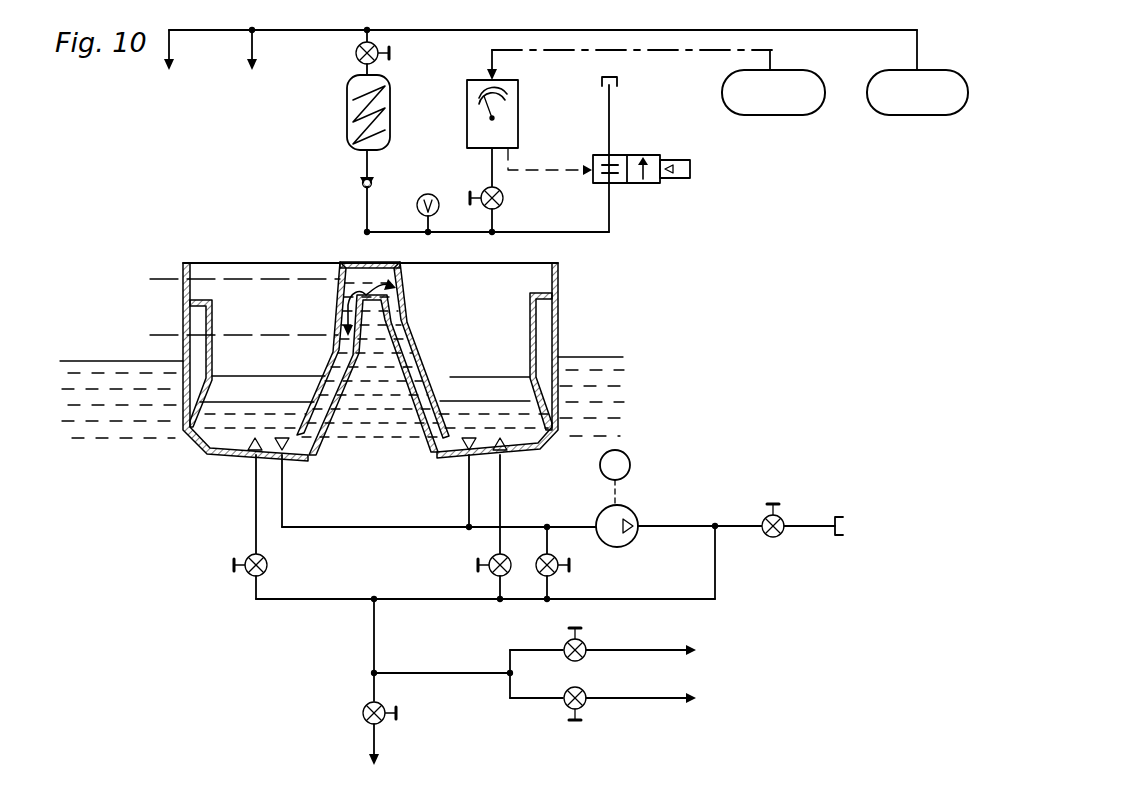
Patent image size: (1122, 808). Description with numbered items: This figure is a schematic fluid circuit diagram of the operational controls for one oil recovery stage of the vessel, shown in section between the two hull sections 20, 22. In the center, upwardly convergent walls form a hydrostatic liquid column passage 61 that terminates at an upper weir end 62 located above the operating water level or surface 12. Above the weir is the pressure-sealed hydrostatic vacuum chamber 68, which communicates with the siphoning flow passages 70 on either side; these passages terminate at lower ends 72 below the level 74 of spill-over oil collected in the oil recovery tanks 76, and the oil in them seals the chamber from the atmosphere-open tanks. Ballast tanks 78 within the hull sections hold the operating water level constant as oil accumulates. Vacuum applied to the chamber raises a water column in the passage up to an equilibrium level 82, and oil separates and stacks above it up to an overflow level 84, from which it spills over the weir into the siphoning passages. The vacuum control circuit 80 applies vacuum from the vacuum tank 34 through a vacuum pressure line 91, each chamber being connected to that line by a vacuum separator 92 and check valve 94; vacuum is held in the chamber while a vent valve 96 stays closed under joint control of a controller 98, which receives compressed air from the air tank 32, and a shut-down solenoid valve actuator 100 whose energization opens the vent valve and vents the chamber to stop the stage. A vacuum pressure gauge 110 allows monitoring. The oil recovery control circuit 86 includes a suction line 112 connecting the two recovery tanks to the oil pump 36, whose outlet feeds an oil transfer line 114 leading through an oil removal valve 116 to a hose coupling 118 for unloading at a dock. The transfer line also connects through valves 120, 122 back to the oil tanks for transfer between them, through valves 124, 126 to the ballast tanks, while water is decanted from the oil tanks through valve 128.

The operating water level or surface 12 is at (606, 357).
The hull section 20 is at (223, 462).
The hull section 22 is at (525, 451).
The air tank 32 is at (772, 118).
The vacuum tank 34 is at (900, 117).
The oil pump 36 is at (630, 507).
The hydrostatic liquid column passage 61 is at (390, 356).
The upper weir end 62 is at (393, 291).
The hydrostatic vacuum zone or chamber 68 is at (358, 268).
The siphoning flow passage 70 is at (401, 327).
The lower end of siphoning passage 72 is at (437, 460).
The level of spill over oil 74 is at (244, 404).
The oil recovery tank 76 is at (192, 395).
The ballast tank 78 is at (196, 322).
The vacuum control circuit 80 is at (603, 233).
The equilibrium level 82 is at (256, 339).
The overflow level 84 is at (250, 280).
The oil recovery control circuit 86 is at (275, 614).
The vacuum pressure line 91 is at (438, 32).
The vacuum separator 92 is at (347, 95).
The check valve 94 is at (362, 183).
The vent valve 96 is at (627, 185).
The controller 98 is at (518, 100).
The shut-down solenoid valve actuator 100 is at (680, 180).
The vacuum pressure gauge 110 is at (428, 194).
The suction line 112 is at (360, 527).
The oil transfer line 114 is at (315, 602).
The oil removal valve 116 is at (773, 538).
The hose coupling 118 is at (838, 518).
The valve 120 is at (268, 565).
The valve 122 is at (490, 572).
The valve 124 is at (585, 641).
The valve 126 is at (590, 712).
The valve 128 is at (362, 714).